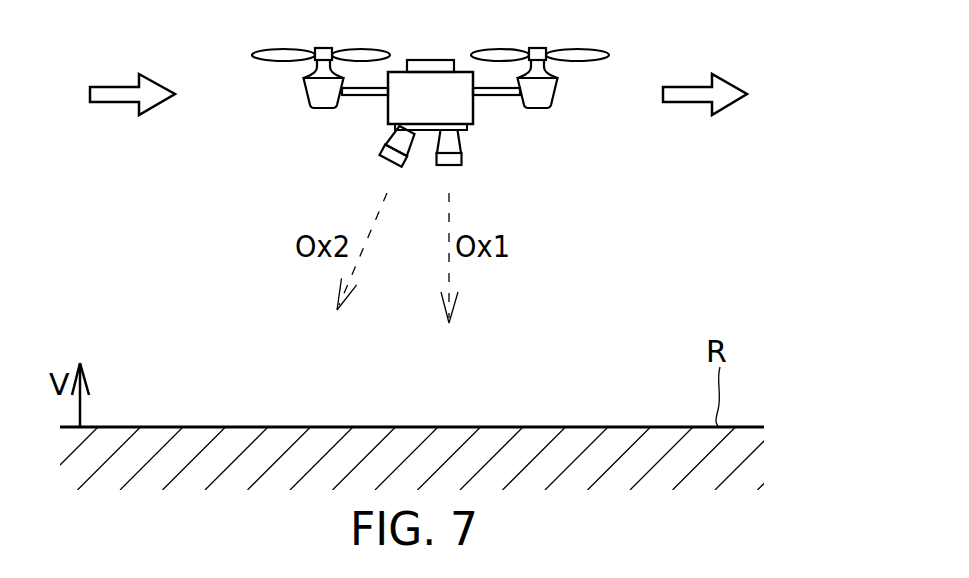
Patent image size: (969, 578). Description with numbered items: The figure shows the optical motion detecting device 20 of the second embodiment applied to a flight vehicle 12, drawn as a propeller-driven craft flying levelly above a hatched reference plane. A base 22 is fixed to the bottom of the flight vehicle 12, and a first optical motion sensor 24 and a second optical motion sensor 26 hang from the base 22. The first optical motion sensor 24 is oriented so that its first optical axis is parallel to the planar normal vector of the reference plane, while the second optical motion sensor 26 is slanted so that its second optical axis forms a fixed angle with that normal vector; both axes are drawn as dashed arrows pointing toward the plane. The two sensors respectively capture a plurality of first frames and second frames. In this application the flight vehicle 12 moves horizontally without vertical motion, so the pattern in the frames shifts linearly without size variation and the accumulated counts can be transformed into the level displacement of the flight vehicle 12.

The flight vehicle 12 is at (428, 83).
The optical motion detecting device 20 is at (459, 158).
The base 22 is at (467, 127).
The first optical motion sensor 24 is at (457, 164).
The second optical motion sensor 26 is at (393, 154).